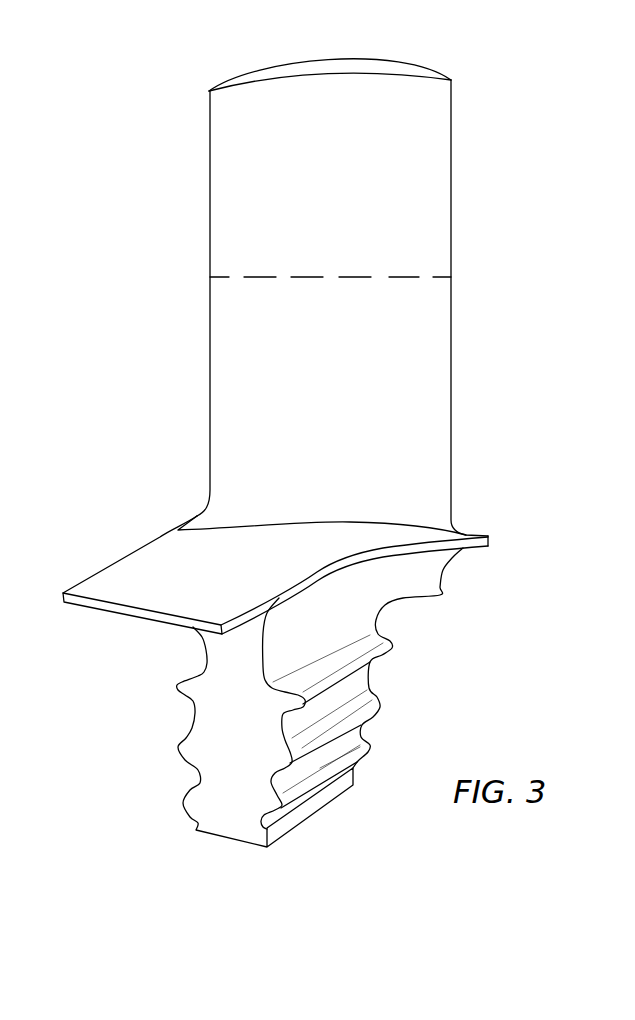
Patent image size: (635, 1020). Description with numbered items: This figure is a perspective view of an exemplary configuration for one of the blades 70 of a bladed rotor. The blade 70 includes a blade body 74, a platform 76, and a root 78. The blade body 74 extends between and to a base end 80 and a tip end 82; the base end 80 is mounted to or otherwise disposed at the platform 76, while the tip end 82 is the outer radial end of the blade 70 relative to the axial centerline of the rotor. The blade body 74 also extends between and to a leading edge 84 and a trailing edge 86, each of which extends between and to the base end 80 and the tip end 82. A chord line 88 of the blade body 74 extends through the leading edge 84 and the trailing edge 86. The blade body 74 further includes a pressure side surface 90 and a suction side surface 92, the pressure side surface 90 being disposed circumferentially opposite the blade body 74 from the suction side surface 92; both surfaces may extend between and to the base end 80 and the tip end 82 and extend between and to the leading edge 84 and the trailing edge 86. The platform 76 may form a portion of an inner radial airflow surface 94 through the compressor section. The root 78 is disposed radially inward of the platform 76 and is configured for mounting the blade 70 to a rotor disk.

The blade 70 is at (339, 434).
The blade body 74 is at (353, 279).
The platform 76 is at (339, 567).
The root 78 is at (408, 674).
The base end 80 is at (238, 530).
The tip end 82 is at (358, 68).
The leading edge 84 is at (210, 175).
The trailing edge 86 is at (453, 210).
The chord line 88 is at (352, 278).
The pressure side surface 90 is at (420, 440).
The suction side surface 92 is at (270, 66).
The inner radial airflow surface 94 is at (147, 565).